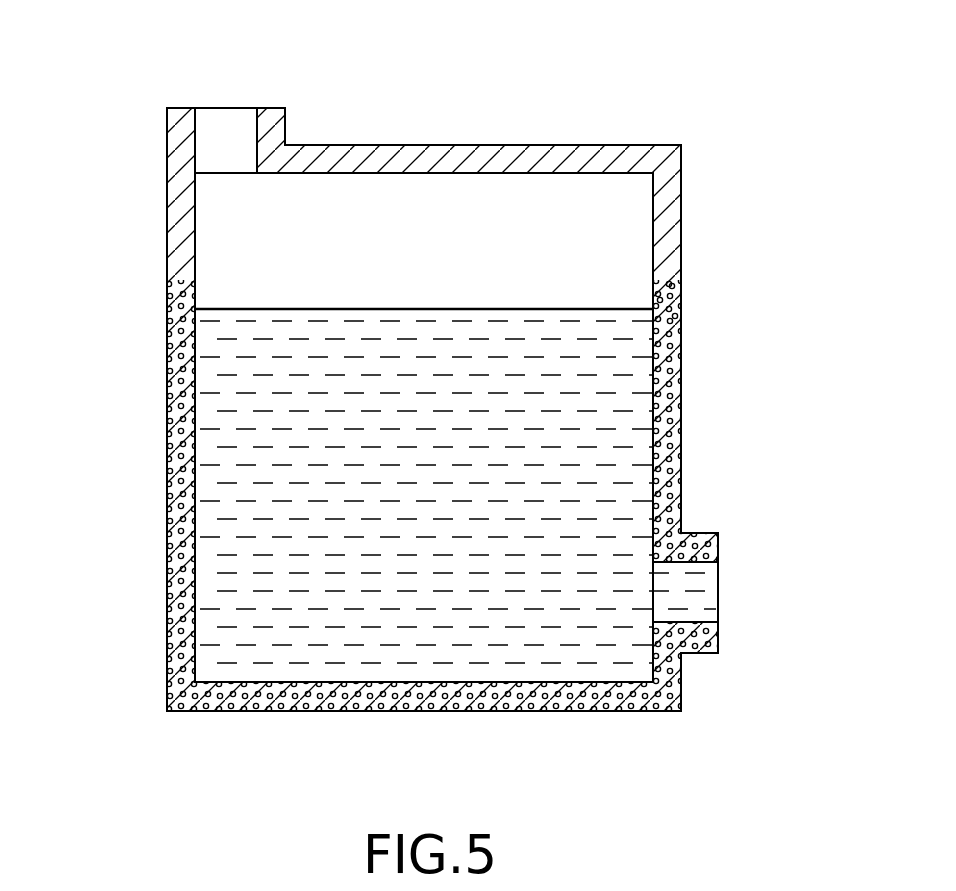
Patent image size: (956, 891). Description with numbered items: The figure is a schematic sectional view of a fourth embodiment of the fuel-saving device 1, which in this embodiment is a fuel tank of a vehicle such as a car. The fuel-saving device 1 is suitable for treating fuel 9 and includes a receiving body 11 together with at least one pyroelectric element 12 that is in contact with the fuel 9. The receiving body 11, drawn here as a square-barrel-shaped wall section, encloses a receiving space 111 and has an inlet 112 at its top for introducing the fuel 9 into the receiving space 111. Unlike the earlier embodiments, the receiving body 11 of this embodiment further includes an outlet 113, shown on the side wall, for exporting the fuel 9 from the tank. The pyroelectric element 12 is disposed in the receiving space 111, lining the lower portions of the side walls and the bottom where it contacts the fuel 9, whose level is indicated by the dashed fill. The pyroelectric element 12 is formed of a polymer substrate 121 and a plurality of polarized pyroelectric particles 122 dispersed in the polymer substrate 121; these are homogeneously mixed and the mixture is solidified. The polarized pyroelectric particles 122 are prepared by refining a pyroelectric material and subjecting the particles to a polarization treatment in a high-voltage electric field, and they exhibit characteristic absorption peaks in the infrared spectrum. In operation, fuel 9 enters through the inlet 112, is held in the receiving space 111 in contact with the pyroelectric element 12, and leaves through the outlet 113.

The fuel-saving device 1 is at (152, 175).
The receiving body 11 is at (507, 355).
The receiving space 111 is at (608, 213).
The inlet 112 is at (219, 108).
The outlet 113 is at (718, 590).
The pyroelectric element 12 is at (507, 484).
The polymer substrate 121 is at (683, 362).
The polarized pyroelectric particles 122 is at (683, 285).
The fuel 9 is at (223, 588).